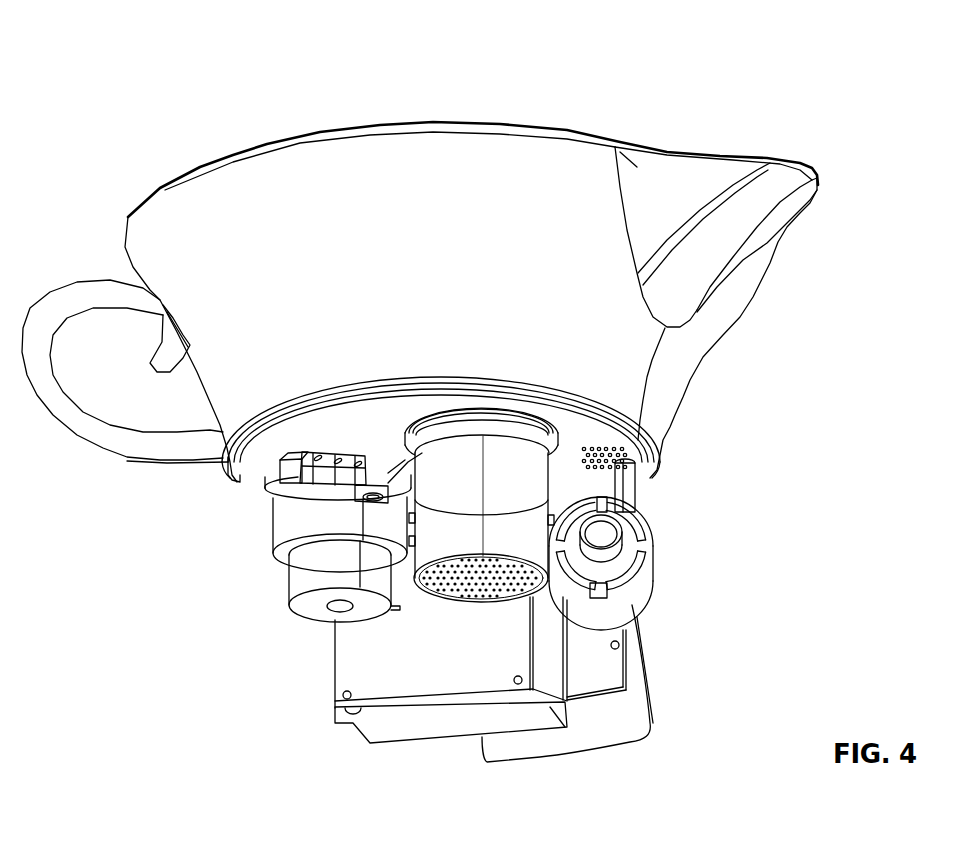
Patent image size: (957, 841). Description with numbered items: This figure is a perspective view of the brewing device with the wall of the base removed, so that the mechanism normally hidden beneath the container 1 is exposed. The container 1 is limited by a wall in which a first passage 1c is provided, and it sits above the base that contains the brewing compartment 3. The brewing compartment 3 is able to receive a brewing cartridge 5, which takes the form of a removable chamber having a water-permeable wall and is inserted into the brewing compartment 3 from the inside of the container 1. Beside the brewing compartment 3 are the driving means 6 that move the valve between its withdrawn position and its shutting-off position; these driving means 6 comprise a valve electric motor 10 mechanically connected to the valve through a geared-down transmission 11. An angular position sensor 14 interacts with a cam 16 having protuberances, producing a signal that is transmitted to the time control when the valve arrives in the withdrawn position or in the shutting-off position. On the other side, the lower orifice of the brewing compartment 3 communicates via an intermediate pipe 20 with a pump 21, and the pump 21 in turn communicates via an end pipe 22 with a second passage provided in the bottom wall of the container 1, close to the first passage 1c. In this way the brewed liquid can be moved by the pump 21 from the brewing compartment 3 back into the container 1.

The container 1 is at (212, 235).
The first passage 1c is at (613, 457).
The brewing compartment 3 is at (481, 489).
The brewing cartridge 5 is at (455, 528).
The driving means 6 is at (249, 569).
The valve electric motor 10 is at (312, 570).
The geared-down transmission 11 is at (293, 521).
The angular position sensor 14 is at (308, 458).
The cam 16 is at (275, 500).
The intermediate pipe 20 is at (618, 530).
The pump 21 is at (643, 587).
The end pipe 22 is at (635, 493).